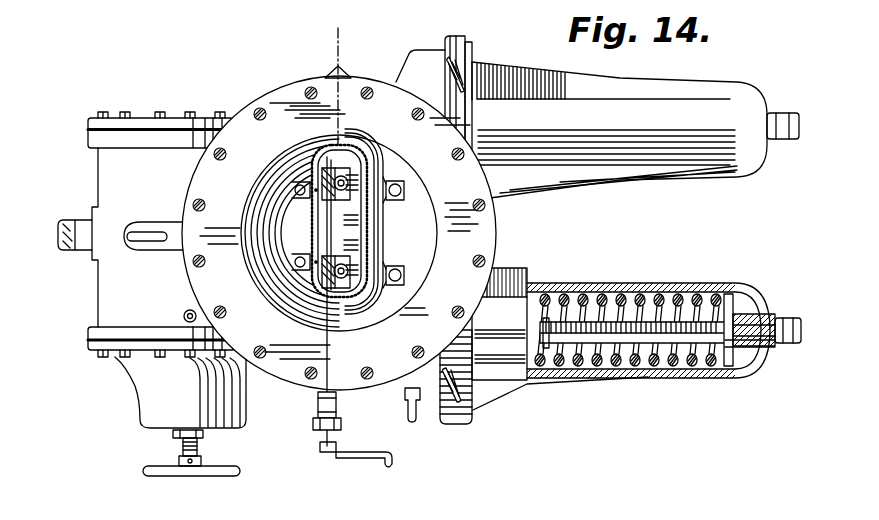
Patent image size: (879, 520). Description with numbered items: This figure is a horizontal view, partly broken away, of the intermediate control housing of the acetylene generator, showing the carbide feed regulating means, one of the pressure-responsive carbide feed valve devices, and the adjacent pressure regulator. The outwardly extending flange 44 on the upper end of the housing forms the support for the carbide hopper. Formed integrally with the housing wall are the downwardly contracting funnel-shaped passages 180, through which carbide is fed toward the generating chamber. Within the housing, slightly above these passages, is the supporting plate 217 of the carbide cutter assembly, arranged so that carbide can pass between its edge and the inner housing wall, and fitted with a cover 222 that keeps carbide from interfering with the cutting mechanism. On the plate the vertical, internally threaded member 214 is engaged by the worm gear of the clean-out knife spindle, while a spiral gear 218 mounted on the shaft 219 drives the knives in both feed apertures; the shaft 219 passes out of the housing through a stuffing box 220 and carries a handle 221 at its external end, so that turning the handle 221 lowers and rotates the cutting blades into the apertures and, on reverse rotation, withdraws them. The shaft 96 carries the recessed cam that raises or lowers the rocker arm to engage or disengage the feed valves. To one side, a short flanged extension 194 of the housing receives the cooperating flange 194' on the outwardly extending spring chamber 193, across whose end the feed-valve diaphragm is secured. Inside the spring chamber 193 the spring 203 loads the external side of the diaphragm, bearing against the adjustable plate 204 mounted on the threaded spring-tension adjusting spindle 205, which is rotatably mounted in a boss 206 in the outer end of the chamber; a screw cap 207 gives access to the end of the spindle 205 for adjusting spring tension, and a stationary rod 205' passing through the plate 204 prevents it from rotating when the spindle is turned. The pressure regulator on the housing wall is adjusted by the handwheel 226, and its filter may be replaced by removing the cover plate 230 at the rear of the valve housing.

The cover plate 230 is at (148, 118).
The outwardly extending flange 44 is at (200, 186).
The funnel-shaped passages 180 is at (260, 228).
The spiral gear 218 is at (318, 188).
The shaft 219 is at (324, 208).
The cover 222 is at (366, 166).
The internally threaded member 214 is at (383, 182).
The supporting plate 217 is at (350, 236).
The stuffing box 220 is at (318, 407).
The handle 221 is at (364, 453).
The handwheel 226 is at (177, 476).
The shaft 96 is at (413, 422).
The flanged extension 194 is at (435, 237).
The cooperating flange 194' is at (499, 227).
The spring chamber 193 is at (630, 108).
The screw cap 207 is at (785, 140).
The spring 203 is at (607, 296).
The adjustable plate 204 is at (733, 310).
The boss 206 is at (752, 323).
The spring-tension adjusting spindle 205 is at (632, 372).
The stationary rod 205' is at (748, 376).